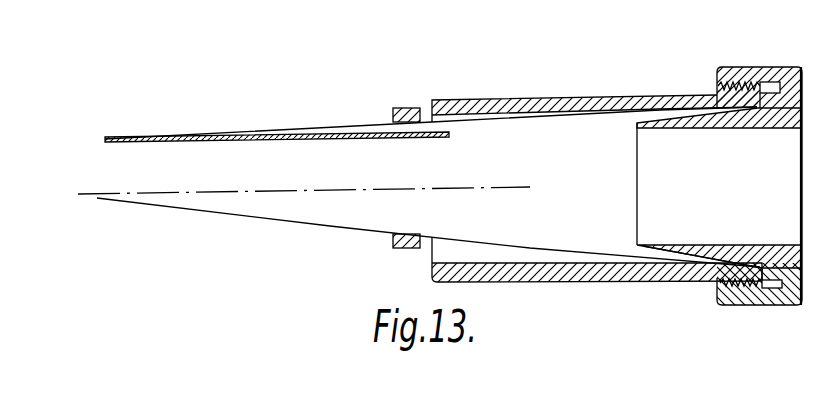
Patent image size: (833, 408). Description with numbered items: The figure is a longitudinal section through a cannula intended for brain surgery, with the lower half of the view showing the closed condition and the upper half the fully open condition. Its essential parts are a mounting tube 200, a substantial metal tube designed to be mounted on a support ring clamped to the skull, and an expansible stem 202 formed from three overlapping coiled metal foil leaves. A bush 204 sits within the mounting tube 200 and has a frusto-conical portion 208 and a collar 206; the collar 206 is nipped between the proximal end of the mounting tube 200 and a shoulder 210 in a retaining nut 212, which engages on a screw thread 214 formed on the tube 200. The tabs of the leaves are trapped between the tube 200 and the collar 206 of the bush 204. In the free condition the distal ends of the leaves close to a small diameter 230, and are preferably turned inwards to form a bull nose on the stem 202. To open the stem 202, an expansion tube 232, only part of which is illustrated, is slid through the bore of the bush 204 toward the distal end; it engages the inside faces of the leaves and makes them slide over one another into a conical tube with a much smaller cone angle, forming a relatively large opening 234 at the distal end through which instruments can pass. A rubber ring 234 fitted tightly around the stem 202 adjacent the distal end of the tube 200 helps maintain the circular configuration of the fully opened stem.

The mounting tube 200 is at (528, 99).
The expansible stem 202 is at (252, 226).
The bush 204 is at (768, 117).
The collar 206 is at (779, 306).
The frusto-conical portion 208 is at (697, 254).
The shoulder 210 is at (800, 91).
The retaining nut 212 is at (755, 66).
The screw thread 214 is at (720, 84).
The small diameter distal end 230 is at (97, 198).
The expansion tube 232 is at (338, 140).
The rubber ring 234 is at (104, 163).